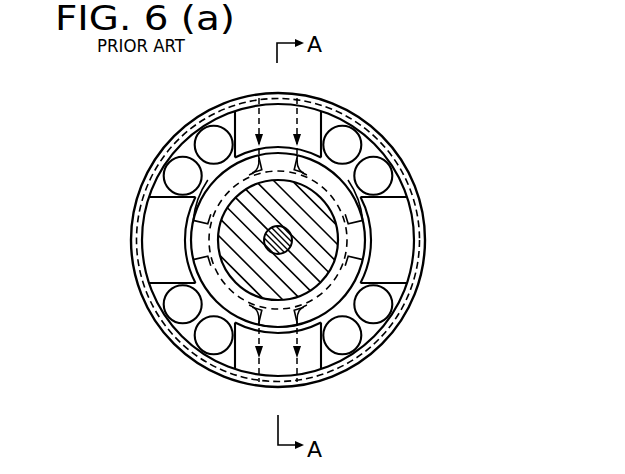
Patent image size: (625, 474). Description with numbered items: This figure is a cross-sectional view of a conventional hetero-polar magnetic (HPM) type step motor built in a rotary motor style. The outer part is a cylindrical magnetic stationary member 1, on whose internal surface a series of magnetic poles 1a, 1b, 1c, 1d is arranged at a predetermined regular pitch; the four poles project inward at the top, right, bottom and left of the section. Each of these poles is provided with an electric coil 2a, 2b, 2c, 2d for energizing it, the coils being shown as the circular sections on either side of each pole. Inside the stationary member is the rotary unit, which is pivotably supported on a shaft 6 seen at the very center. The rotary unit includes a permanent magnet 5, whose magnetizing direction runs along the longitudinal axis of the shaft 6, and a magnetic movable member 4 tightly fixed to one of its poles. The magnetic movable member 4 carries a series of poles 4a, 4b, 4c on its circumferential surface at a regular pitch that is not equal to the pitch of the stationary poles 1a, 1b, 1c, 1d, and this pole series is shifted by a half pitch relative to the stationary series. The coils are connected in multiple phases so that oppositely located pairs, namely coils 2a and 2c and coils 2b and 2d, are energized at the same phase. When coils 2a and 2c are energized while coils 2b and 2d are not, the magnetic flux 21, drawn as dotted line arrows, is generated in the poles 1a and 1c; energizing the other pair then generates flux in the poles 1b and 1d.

The magnetic stationary member 1 is at (334, 111).
The magnetic pole 1a is at (282, 118).
The magnetic pole 1b is at (397, 277).
The magnetic pole 1c is at (250, 358).
The magnetic pole 1d is at (152, 262).
The electric coil 2a is at (216, 132).
The electric coil 2b is at (378, 188).
The electric coil 2c is at (348, 355).
The electric coil 2d is at (182, 173).
The magnetic movable member 4 is at (362, 271).
The pole 4a is at (217, 190).
The pole 4b is at (343, 190).
The pole 4c is at (279, 330).
The permanent magnet 5 is at (345, 223).
The shaft 6 is at (262, 229).
The magnetic flux 21 is at (311, 381).